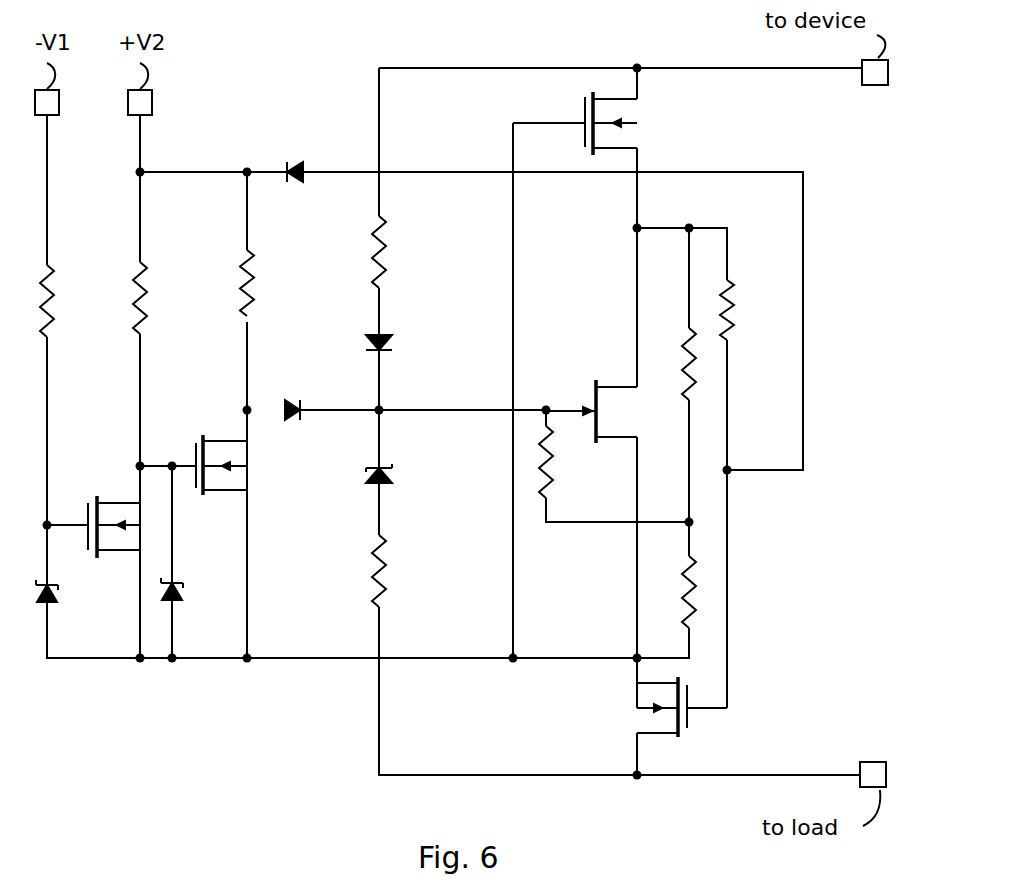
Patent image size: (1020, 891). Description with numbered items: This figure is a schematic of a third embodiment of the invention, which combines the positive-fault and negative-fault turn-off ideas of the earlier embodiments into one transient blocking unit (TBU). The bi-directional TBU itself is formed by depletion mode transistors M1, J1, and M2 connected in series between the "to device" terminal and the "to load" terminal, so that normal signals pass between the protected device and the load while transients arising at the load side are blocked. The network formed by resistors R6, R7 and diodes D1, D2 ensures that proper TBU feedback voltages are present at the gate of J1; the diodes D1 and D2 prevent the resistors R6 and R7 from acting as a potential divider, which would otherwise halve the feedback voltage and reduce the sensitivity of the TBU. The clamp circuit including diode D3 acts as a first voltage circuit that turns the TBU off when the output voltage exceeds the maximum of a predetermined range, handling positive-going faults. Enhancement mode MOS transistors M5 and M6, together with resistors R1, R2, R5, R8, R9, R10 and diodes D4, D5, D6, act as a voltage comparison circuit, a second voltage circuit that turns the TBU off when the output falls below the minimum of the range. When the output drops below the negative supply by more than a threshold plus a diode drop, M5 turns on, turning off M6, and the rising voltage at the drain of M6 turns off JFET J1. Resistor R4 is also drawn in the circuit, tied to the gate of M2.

The resistor R1 is at (685, 352).
The resistor R2 is at (685, 607).
The resistor R4 is at (732, 288).
The resistor R5 is at (551, 460).
The resistor R6 is at (386, 250).
The resistor R7 is at (375, 568).
The resistor R8 is at (57, 298).
The resistor R9 is at (146, 298).
The resistor R10 is at (255, 290).
The diode D1 is at (366, 340).
The diode D2 is at (368, 480).
The diode D3 is at (296, 168).
The diode D4 is at (53, 602).
The diode D5 is at (183, 598).
The diode D6 is at (292, 402).
The depletion mode transistor M1 is at (588, 95).
The depletion mode transistor M2 is at (682, 738).
The enhancement mode MOS transistor M5 is at (97, 498).
The enhancement mode MOS transistor M6 is at (205, 436).
The depletion mode JFET transistor J1 is at (596, 397).